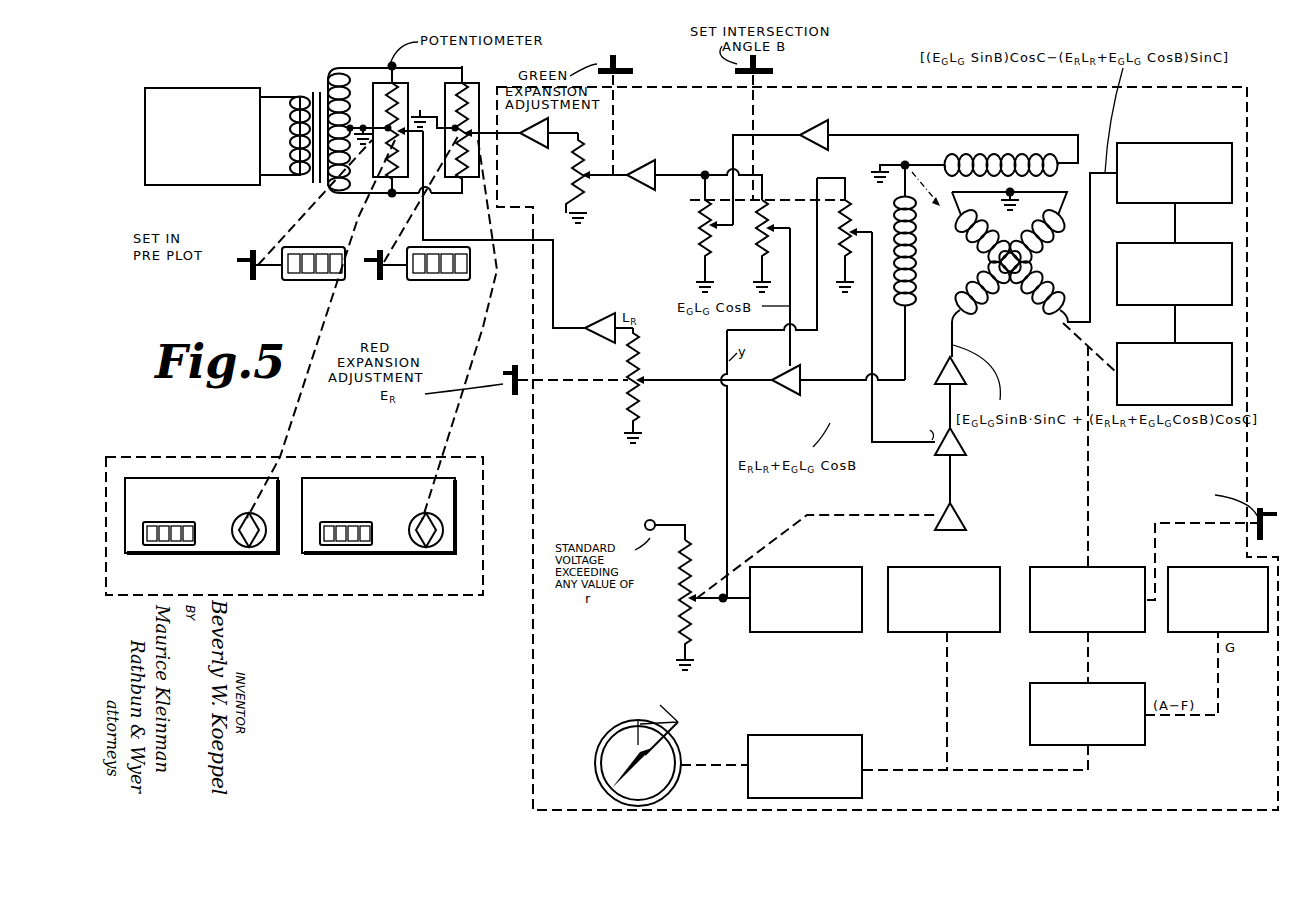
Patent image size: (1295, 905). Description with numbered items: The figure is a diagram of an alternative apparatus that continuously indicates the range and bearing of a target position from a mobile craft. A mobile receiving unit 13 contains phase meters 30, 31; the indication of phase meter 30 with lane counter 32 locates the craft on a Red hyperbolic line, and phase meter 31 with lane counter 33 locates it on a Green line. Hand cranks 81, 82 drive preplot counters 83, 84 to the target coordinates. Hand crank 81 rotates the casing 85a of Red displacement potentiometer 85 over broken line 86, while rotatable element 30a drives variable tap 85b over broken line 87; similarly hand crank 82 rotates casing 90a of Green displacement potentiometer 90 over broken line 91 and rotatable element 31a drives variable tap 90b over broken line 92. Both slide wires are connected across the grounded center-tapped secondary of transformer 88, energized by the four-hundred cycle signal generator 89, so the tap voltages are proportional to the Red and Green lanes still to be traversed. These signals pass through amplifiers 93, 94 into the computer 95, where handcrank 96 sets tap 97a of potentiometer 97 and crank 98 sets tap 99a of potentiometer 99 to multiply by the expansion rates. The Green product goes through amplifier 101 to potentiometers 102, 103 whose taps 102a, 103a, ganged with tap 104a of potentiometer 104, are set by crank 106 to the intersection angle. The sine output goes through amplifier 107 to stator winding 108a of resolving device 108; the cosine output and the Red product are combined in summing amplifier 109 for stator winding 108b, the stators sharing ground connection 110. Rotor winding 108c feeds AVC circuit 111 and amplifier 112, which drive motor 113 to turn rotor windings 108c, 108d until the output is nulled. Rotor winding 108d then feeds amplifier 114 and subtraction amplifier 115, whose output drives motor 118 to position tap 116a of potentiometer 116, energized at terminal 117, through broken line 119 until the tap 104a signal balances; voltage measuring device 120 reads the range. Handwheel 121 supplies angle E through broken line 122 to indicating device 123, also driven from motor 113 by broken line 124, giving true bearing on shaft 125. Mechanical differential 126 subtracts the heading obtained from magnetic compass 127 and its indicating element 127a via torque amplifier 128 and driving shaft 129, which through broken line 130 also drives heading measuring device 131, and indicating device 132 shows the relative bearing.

The mobile receiving unit 13 is at (294, 526).
The phase meter 30 is at (188, 478).
The rotatable element 30a is at (232, 540).
The phase meter 31 is at (381, 478).
The rotatable element 31a is at (409, 540).
The lane counter 32 is at (194, 524).
The lane counter 33 is at (370, 524).
The hand crank 81 is at (249, 275).
The hand crank 82 is at (380, 280).
The preplot counter 83 is at (289, 279).
The preplot counter 84 is at (417, 279).
The Red displacement potentiometer 85 is at (373, 92).
The potentiometer casing or support 85a is at (384, 84).
The variable tap 85b is at (404, 128).
The broken line 86 is at (310, 216).
The broken line 87 is at (364, 222).
The transformer 88 is at (314, 90).
The 400 cycle signal generator 89 is at (228, 87).
The Green displacement potentiometer 90 is at (470, 112).
The casing or support 90a is at (464, 110).
The variable tap 90b is at (477, 137).
The broken line 91 is at (411, 242).
The broken line 92 is at (490, 222).
The amplifier 93 is at (524, 127).
The amplifier 94 is at (601, 326).
The computer 95 is at (887, 448).
The handcrank 96 is at (634, 66).
The potentiometer 97 is at (573, 172).
The variable tap 97a is at (582, 175).
The crank 98 is at (516, 363).
The potentiometer 99 is at (640, 334).
The variable tap 99a is at (643, 376).
The amplifier 101 is at (622, 166).
The potentiometer 102 is at (700, 240).
The variable tap 102a is at (722, 230).
The potentiometer 103 is at (760, 242).
The variable tap 103a is at (777, 230).
The potentiometer 104 is at (846, 200).
The variable tap 104a is at (870, 245).
The handwheel or crank 106 is at (774, 68).
The amplifier 107 is at (820, 132).
The resolving device 108 is at (1068, 190).
The stator winding 108a is at (1040, 156).
The stator winding 108b is at (915, 268).
The rotor winding 108c is at (1036, 290).
The rotor winding 108d is at (983, 308).
The summing amplifier 109 is at (832, 321).
The ground connection 110 is at (874, 170).
The AVC circuit 111 is at (1215, 140).
The amplifier 112 is at (1215, 242).
The motor 113 is at (1215, 342).
The amplifier 114 is at (943, 360).
The subtraction amplifier 115 is at (960, 460).
The potentiometer 116 is at (676, 582).
The variable tap 116a is at (698, 603).
The terminal 117 is at (660, 517).
The motor 118 is at (966, 514).
The broken line 119 is at (869, 509).
The voltage measuring device 120 is at (858, 565).
The crank or handwheel 121 is at (1261, 508).
The broken line 122 is at (1183, 538).
The indicating device 123 is at (1131, 565).
The broken line 124 is at (1088, 480).
The shaft 125 is at (1090, 663).
The mechanical differential 126 is at (1146, 745).
The magnetic compass 127 is at (606, 758).
The rotary indicating element 127a is at (656, 762).
The torque amplifier 128 is at (820, 732).
The driving shaft 129 is at (1002, 761).
The broken line 130 is at (945, 690).
The measuring device 131 is at (956, 565).
The indicating device 132 is at (1253, 565).